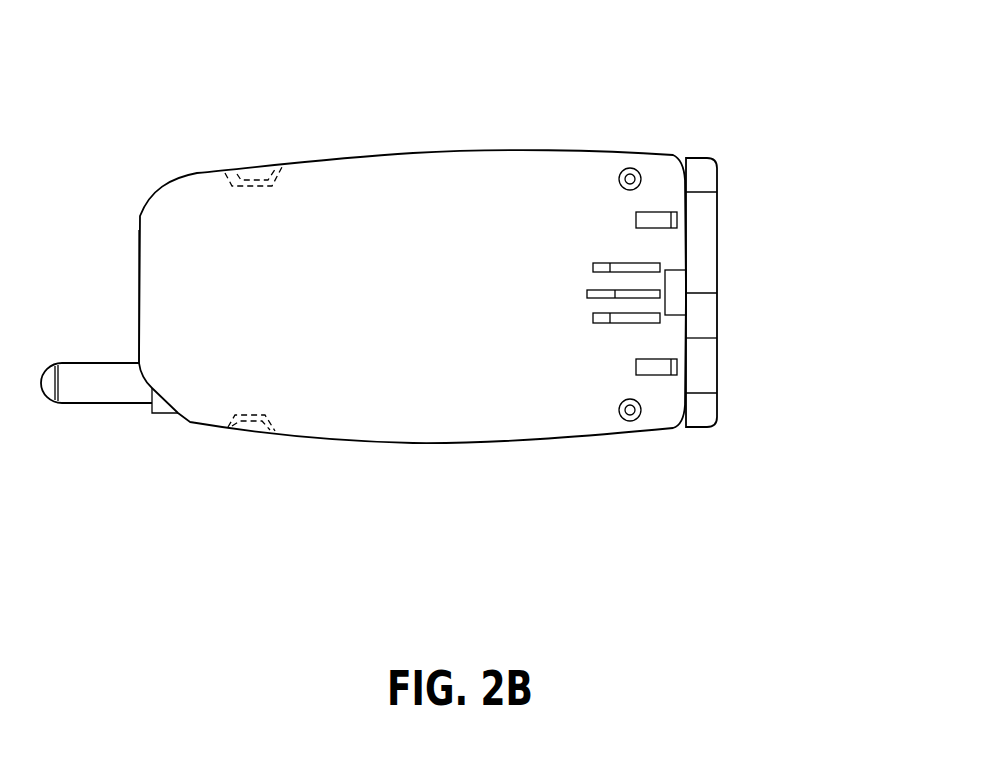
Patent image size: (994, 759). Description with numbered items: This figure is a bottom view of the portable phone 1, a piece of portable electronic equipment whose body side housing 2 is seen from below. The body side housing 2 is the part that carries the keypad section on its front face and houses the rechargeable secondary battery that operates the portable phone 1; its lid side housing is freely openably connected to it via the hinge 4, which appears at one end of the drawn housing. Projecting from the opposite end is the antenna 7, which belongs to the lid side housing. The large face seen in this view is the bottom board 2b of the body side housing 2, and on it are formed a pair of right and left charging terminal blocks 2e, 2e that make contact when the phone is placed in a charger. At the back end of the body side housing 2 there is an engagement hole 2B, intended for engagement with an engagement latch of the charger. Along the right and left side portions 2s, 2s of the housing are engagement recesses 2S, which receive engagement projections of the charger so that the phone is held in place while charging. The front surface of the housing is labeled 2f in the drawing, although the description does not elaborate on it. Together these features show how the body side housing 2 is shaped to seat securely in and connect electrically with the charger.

The portable phone 1 is at (439, 129).
The body side housing 2 is at (463, 447).
The bottom board 2b is at (429, 311).
The front surface of casing 2f is at (137, 297).
The engagement recesses 2S is at (242, 173).
The side portions 2s is at (368, 158).
The charging terminal blocks 2e is at (652, 220).
The engagement hole 2B is at (677, 284).
The hinge 4 is at (722, 181).
The antenna 7 is at (97, 390).